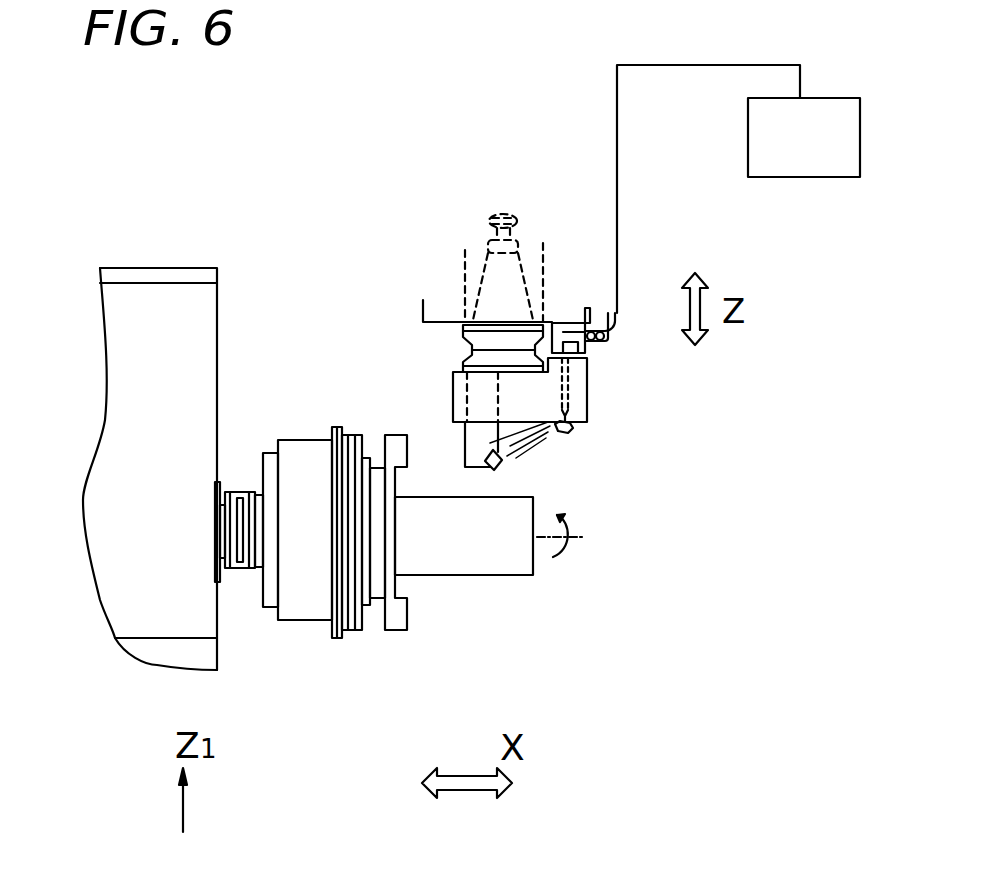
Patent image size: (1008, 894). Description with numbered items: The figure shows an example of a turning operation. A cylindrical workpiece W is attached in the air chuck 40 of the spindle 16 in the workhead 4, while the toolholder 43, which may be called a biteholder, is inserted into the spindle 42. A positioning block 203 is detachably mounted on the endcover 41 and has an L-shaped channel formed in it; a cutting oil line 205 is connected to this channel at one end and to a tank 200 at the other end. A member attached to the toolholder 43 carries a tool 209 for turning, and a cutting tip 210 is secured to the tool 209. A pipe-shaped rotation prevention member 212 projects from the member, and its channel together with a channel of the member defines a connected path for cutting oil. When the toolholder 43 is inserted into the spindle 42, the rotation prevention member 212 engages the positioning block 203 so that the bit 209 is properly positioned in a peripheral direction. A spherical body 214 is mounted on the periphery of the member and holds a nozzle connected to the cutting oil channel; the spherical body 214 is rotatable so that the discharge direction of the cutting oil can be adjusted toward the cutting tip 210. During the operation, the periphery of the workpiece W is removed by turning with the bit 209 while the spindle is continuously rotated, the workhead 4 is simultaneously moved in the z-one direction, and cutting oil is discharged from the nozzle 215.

The workhead 4 is at (207, 320).
The spindle 16 is at (220, 480).
The air chuck 40 is at (313, 440).
The endcover 41 is at (423, 307).
The spindle 42 is at (463, 268).
The toolholder 43 is at (463, 360).
The positioning block 203 is at (560, 322).
The cutting oil line 205 is at (617, 320).
The rotation prevention member 212 is at (587, 312).
The tank 200 is at (817, 177).
The nozzle 215 is at (573, 415).
The spherical body 214 is at (573, 430).
The tool for turning 209 is at (535, 457).
The cutting tip 210 is at (503, 465).
The workpiece W is at (478, 563).